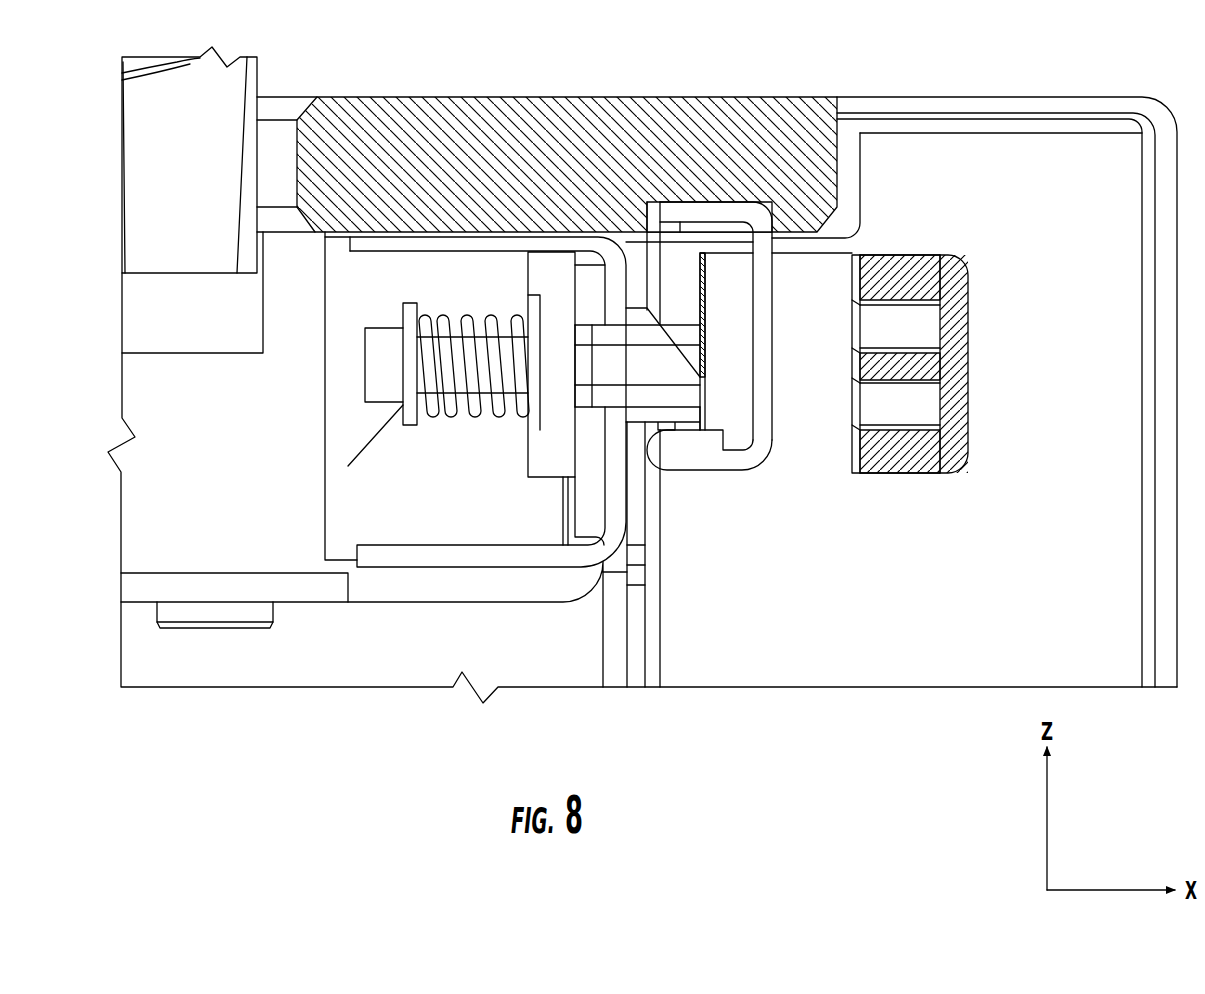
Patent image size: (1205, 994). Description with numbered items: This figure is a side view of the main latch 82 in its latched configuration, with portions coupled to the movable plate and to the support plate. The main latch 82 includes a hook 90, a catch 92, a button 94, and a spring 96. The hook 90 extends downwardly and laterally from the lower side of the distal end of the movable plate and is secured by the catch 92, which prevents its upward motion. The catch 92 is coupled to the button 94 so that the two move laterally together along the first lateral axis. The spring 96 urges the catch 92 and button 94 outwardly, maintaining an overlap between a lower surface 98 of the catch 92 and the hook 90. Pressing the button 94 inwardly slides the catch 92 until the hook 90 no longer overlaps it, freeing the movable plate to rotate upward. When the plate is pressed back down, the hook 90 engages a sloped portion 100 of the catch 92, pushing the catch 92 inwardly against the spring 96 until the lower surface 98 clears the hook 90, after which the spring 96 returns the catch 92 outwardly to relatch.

The main latch 82 is at (905, 162).
The hook 90 is at (722, 462).
The catch 92 is at (660, 402).
The button 94 is at (892, 455).
The spring 96 is at (462, 400).
The lower surface 98 is at (668, 452).
The sloped portion 100 is at (675, 337).